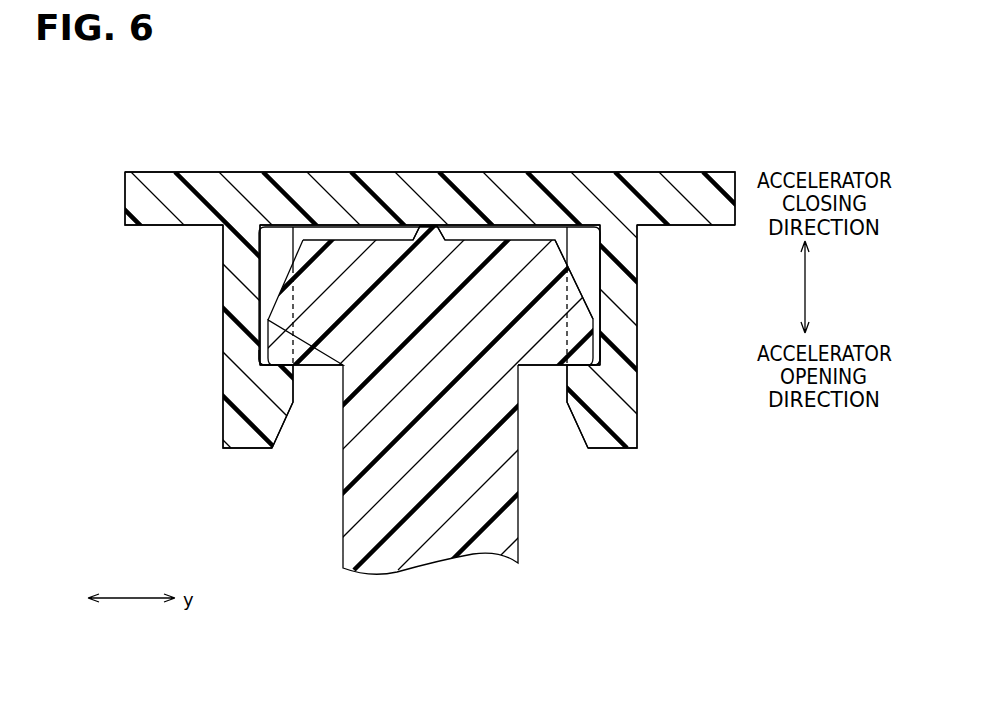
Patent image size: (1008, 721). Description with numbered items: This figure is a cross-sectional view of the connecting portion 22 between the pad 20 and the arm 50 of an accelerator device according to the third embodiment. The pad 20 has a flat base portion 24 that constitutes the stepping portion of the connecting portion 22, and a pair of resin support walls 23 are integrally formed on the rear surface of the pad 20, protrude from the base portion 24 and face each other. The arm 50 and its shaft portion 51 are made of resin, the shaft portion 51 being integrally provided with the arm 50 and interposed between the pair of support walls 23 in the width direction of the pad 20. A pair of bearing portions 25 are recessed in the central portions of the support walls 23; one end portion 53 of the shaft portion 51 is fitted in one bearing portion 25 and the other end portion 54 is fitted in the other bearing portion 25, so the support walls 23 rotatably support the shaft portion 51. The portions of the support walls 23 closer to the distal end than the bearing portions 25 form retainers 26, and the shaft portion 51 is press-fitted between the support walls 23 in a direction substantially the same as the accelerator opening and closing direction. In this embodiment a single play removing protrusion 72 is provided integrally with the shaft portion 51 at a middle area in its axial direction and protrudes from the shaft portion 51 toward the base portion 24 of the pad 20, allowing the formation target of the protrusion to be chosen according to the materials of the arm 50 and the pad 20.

The pad 20 is at (155, 172).
The connecting portion 22 is at (621, 457).
The support walls 23 is at (237, 330).
The base portion 24 is at (484, 195).
The bearing portions 25 is at (256, 354).
The retainers 26 is at (278, 378).
The arm 50 is at (343, 520).
The shaft portion 51 is at (371, 270).
The one end portion 53 is at (580, 312).
The other end portion 54 is at (283, 313).
The play removing protrusion 72 is at (427, 226).